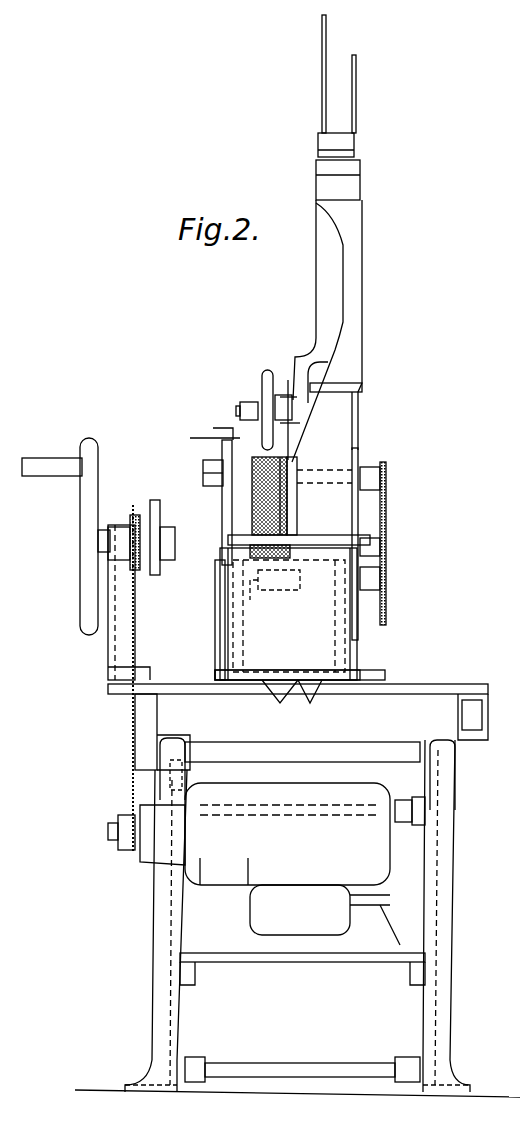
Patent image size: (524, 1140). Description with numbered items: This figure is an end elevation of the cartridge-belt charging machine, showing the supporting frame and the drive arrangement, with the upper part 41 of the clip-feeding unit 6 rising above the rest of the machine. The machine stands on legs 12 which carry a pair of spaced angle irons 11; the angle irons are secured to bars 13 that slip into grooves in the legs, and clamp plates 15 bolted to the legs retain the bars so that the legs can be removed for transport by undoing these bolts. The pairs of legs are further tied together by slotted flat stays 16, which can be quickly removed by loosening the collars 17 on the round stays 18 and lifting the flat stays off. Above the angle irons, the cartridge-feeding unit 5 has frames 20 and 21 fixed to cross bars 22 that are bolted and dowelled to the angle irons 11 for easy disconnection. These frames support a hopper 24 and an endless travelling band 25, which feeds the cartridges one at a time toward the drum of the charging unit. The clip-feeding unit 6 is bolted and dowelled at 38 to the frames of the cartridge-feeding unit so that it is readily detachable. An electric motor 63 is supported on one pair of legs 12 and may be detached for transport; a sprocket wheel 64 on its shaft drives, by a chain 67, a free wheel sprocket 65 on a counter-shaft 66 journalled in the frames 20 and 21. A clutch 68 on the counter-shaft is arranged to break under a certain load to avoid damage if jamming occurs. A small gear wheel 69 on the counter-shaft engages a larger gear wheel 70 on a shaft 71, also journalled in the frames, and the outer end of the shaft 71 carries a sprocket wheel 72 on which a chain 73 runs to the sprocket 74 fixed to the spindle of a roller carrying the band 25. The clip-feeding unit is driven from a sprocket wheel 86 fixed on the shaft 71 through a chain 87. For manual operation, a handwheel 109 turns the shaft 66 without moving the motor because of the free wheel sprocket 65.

The guide rods 41 is at (337, 117).
The clip-feeding unit 6 is at (366, 135).
The chain 87 is at (272, 412).
The cartridge-feeding unit 5 is at (243, 428).
The hopper 24 is at (213, 438).
The endless travelling band 25 is at (250, 508).
The counter-shaft 66 is at (357, 514).
The sprocket 74 is at (378, 465).
The sprocket wheel 72 is at (388, 605).
The chain 73 is at (388, 498).
The small gear wheel 69 is at (372, 535).
The shaft 71 is at (388, 580).
The larger gear wheel 70 is at (335, 632).
The sprocket wheel 86 is at (282, 592).
The frame 20 is at (388, 645).
The frame 21 is at (218, 632).
The bolted and dowelled connection 38 is at (305, 703).
The handwheel 109 is at (92, 555).
The sprocket 65 is at (137, 565).
The clutch 68 is at (156, 568).
The chain 67 is at (128, 783).
The sprocket wheel 64 is at (120, 850).
The cross bars 22 is at (478, 690).
The angle irons 11 is at (485, 738).
The clamp plates 15 is at (172, 736).
The bars 13 is at (240, 783).
The electric motor 63 is at (292, 880).
The legs 12 is at (158, 1000).
The collars 17 is at (380, 1062).
The flat stays 16 is at (405, 1060).
The round stays 18 is at (290, 1092).